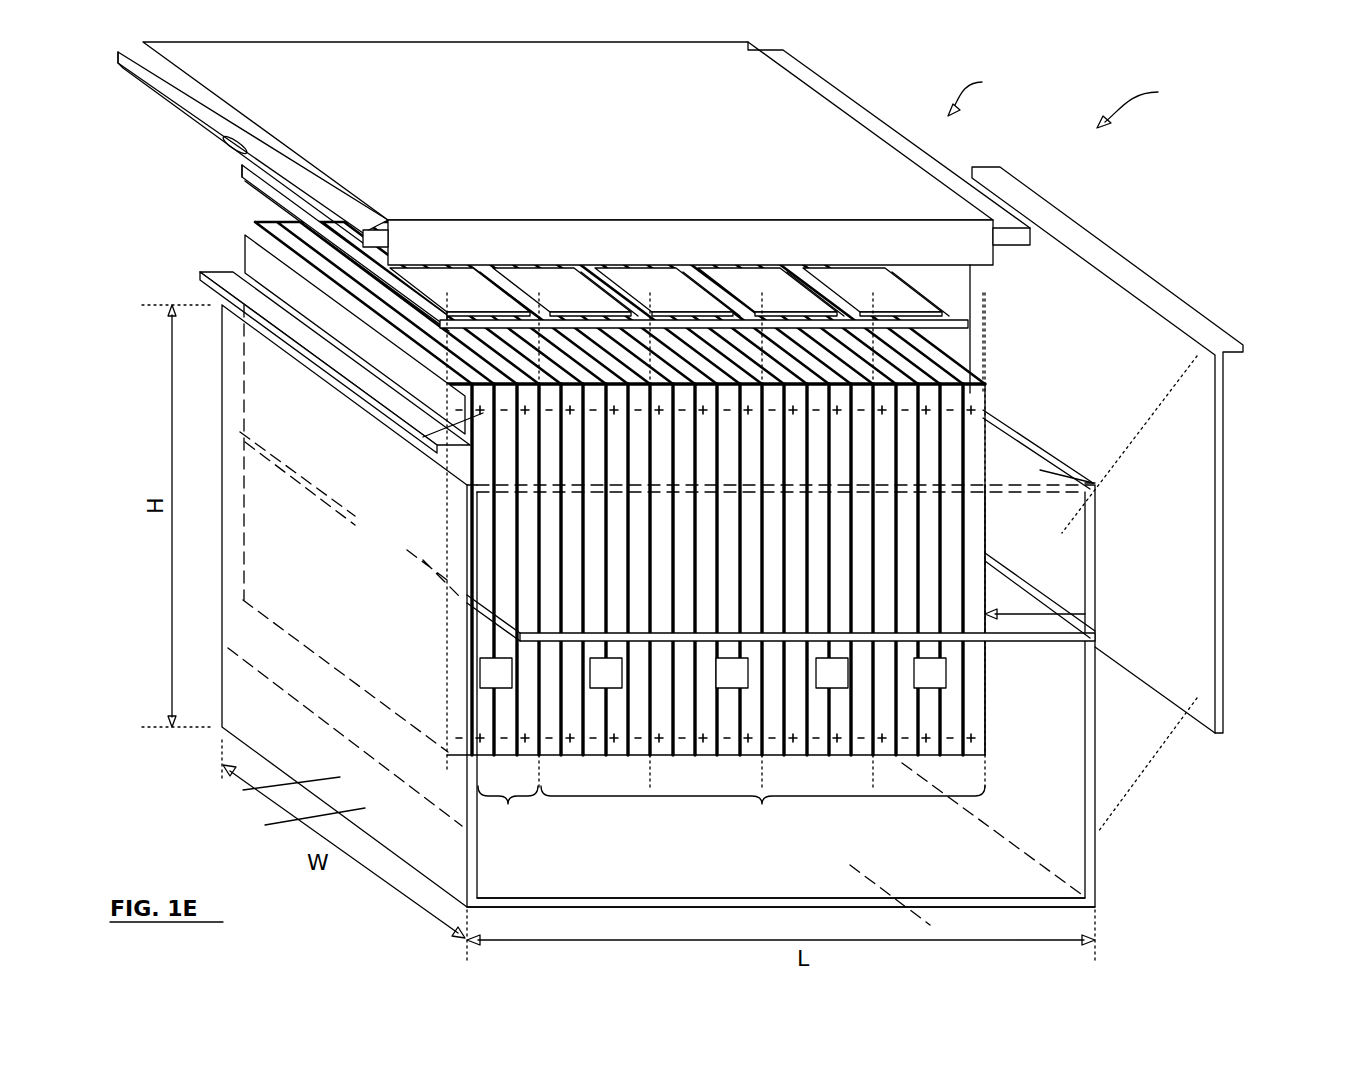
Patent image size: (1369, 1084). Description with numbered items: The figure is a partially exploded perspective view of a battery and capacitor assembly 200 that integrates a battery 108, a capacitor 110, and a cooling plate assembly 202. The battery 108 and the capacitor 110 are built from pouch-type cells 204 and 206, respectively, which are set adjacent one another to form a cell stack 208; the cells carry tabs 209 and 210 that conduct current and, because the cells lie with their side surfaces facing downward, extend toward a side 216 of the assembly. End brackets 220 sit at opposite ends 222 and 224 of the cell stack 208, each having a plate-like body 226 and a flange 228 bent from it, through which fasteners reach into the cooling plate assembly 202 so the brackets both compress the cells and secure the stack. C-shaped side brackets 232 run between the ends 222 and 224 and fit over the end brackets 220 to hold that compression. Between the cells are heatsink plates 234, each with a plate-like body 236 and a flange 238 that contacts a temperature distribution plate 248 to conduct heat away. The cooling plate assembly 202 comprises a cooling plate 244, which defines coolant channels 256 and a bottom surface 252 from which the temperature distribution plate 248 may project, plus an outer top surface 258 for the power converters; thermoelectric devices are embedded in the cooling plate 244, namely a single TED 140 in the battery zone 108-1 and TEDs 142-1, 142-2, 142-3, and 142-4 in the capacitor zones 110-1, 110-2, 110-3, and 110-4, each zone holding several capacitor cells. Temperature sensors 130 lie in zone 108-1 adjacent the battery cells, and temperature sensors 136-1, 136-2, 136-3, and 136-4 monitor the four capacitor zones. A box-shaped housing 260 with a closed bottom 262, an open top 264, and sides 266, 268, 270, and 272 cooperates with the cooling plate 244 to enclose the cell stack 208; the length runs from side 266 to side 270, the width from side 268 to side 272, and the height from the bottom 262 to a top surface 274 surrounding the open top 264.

The battery and capacitor assembly 200 is at (1149, 104).
The cooling plate assembly 202 is at (986, 93).
The cells 204 is at (455, 630).
The cells 206 is at (977, 595).
The cell stack 208 is at (1095, 615).
The tabs 209 is at (423, 437).
The tabs 210 is at (983, 393).
The side 216 is at (930, 925).
The end brackets 220 is at (380, 742).
The end 222 is at (263, 583).
The end 224 is at (987, 727).
The plate-like body 226 is at (217, 303).
The flange 228 is at (228, 270).
The side brackets 232 is at (245, 438).
The heatsink plates 234 is at (963, 532).
The plate-like body 236 is at (988, 420).
The flange 238 is at (957, 372).
The cooling plate 244 is at (187, 110).
The temperature distribution plate 248 is at (243, 172).
The bottom surface 252 is at (985, 300).
The coolant channels 256 is at (227, 145).
The outer top surface 258 is at (612, 150).
The housing 260 is at (243, 790).
The closed bottom 262 is at (723, 880).
The open top 264 is at (1092, 483).
The side 266 is at (265, 825).
The side 268 is at (781, 918).
The side 270 is at (1033, 828).
The side 272 is at (218, 388).
The top surface 274 is at (1040, 470).
The battery 108 is at (508, 808).
The zone 108-1 is at (508, 586).
The capacitor 110 is at (763, 812).
The zone 110-1 is at (605, 586).
The zone 110-2 is at (717, 586).
The zone 110-3 is at (828, 586).
The zone 110-4 is at (718, 586).
The temperature sensors 130 is at (502, 688).
The temperature sensor 136-1 is at (618, 688).
The temperature sensor 136-2 is at (742, 688).
The temperature sensor 136-3 is at (845, 688).
The temperature sensor 136-4 is at (945, 680).
The TED 140 is at (460, 287).
The TED 142-1 is at (568, 287).
The TED 142-2 is at (670, 287).
The TED 142-3 is at (773, 287).
The TED 142-4 is at (875, 287).